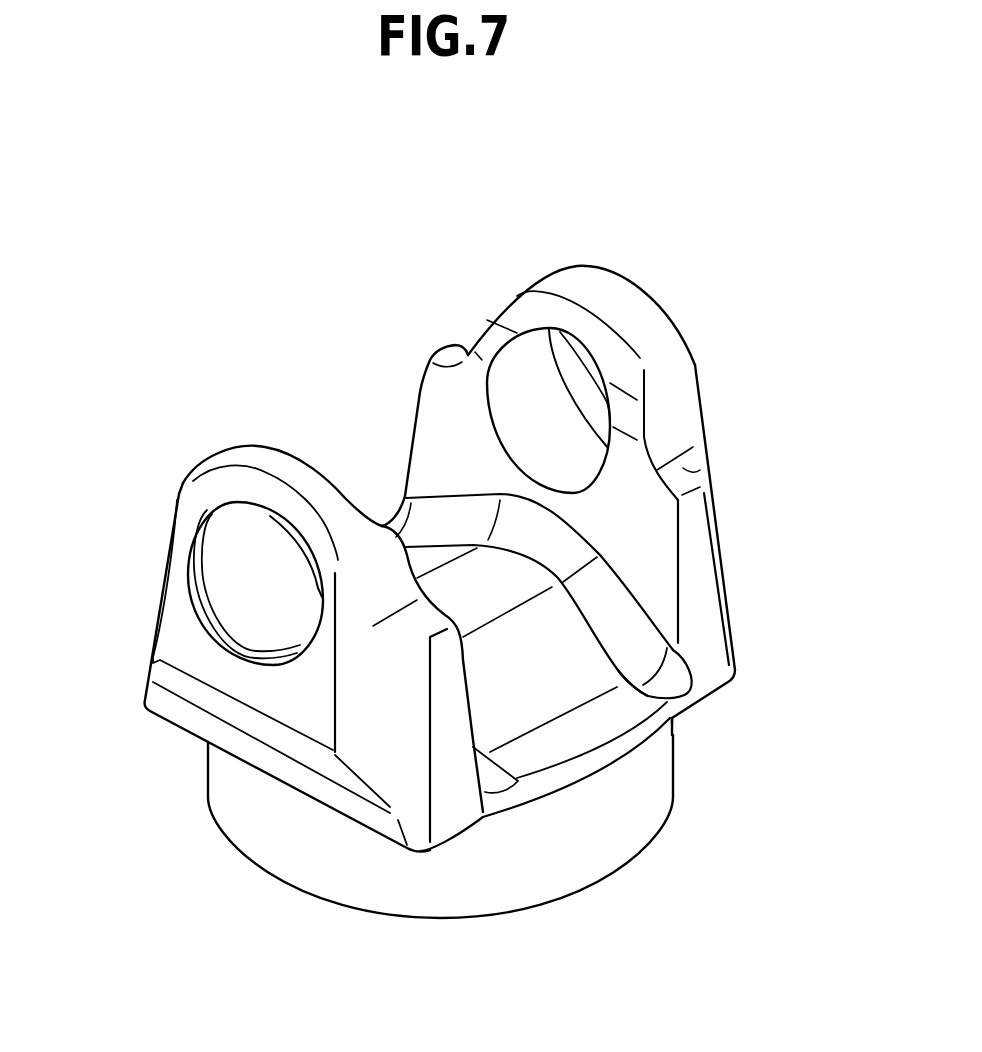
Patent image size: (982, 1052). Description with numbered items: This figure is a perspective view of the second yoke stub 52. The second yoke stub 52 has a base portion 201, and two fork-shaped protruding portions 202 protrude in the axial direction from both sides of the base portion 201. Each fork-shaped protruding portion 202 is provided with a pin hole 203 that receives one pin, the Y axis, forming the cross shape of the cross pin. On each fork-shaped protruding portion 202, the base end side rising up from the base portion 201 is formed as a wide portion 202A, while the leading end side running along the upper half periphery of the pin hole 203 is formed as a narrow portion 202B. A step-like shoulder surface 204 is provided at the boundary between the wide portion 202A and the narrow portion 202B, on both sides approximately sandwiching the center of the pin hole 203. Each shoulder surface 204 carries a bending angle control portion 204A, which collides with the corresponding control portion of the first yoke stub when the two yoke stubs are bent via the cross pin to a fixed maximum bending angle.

The second yoke stub 52 is at (674, 756).
The base portion 201 is at (620, 813).
The fork-shaped protruding portion 202 is at (442, 450).
The wide portion 202A is at (450, 693).
The narrow portion 202B is at (603, 290).
The pin hole 203 is at (519, 372).
The shoulder surface 204 is at (433, 355).
The bending angle control portion 204A is at (435, 360).